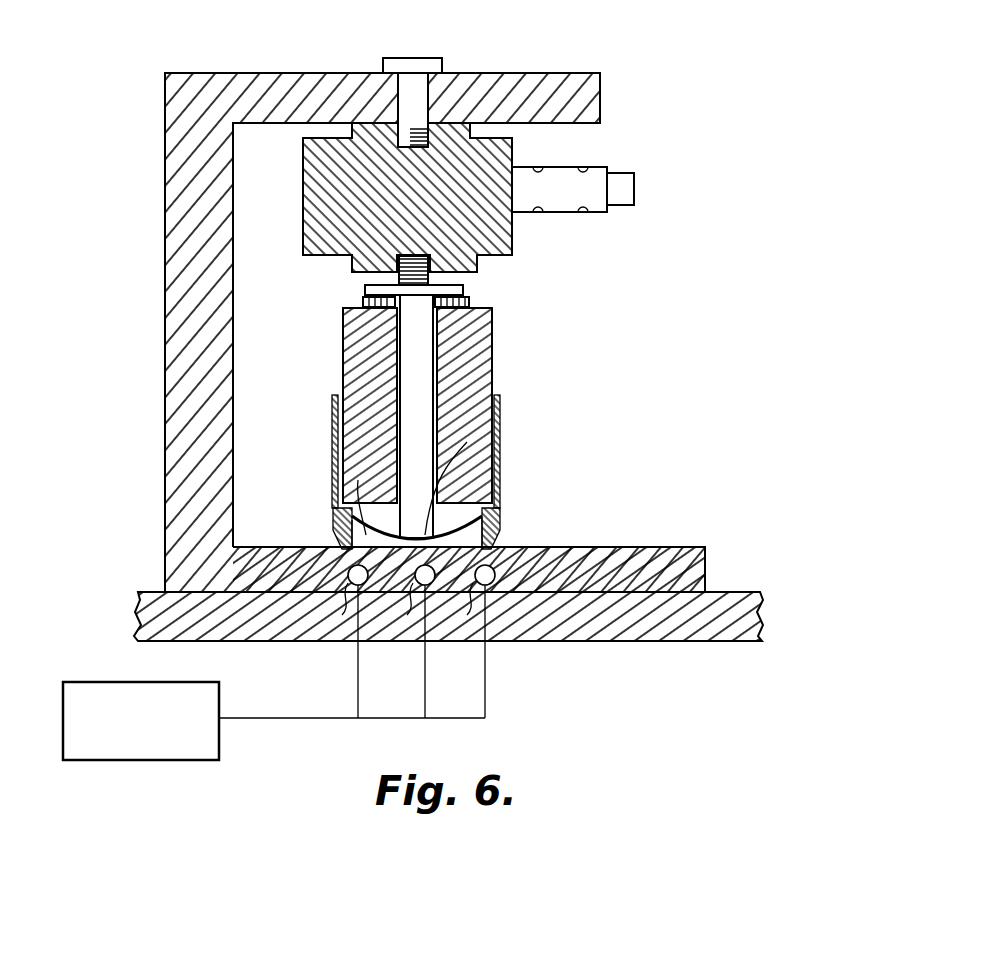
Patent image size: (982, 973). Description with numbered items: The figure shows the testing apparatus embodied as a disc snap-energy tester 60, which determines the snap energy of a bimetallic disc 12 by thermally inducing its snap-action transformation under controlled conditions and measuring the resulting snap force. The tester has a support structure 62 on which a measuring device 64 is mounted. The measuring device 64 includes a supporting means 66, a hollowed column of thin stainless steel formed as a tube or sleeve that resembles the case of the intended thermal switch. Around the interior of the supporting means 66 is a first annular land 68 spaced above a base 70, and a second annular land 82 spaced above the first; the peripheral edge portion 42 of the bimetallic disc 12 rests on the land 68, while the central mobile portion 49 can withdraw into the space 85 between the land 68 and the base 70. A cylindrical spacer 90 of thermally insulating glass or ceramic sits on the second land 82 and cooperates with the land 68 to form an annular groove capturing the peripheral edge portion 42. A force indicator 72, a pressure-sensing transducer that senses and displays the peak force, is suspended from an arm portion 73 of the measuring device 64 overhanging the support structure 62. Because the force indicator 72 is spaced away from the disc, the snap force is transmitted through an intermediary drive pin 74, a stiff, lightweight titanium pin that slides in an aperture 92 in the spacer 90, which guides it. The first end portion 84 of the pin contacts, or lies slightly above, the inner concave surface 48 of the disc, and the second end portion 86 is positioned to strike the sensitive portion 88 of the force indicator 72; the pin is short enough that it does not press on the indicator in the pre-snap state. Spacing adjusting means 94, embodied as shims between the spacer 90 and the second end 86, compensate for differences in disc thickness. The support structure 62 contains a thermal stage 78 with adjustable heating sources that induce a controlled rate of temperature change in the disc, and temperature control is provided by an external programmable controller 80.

The bimetallic disc 12 is at (458, 530).
The peripheral edge portion 42 is at (455, 532).
The inner concave surface 48 is at (378, 531).
The central mobile portion 49 is at (548, 547).
The disc snap-energy tester 60 is at (807, 151).
The support structure 62 is at (707, 573).
The measuring device 64 is at (110, 75).
The supporting means 66 is at (333, 442).
The first annular land 68 is at (333, 512).
The base 70 is at (344, 549).
The force indicator 72 is at (513, 158).
The arm portion 73 is at (600, 93).
The intermediary drive pin 74 is at (343, 322).
The thermal stage 78 is at (380, 620).
The programmable controller 80 is at (131, 750).
The second annular land 82 is at (333, 492).
The first end portion 84 is at (467, 442).
The space 85 is at (466, 542).
The second end portion 86 is at (365, 291).
The sensitive portion 88 is at (465, 278).
The cylindrical spacer 90 is at (478, 360).
The aperture 92 is at (412, 360).
The spacing adjusting means 94 is at (478, 303).